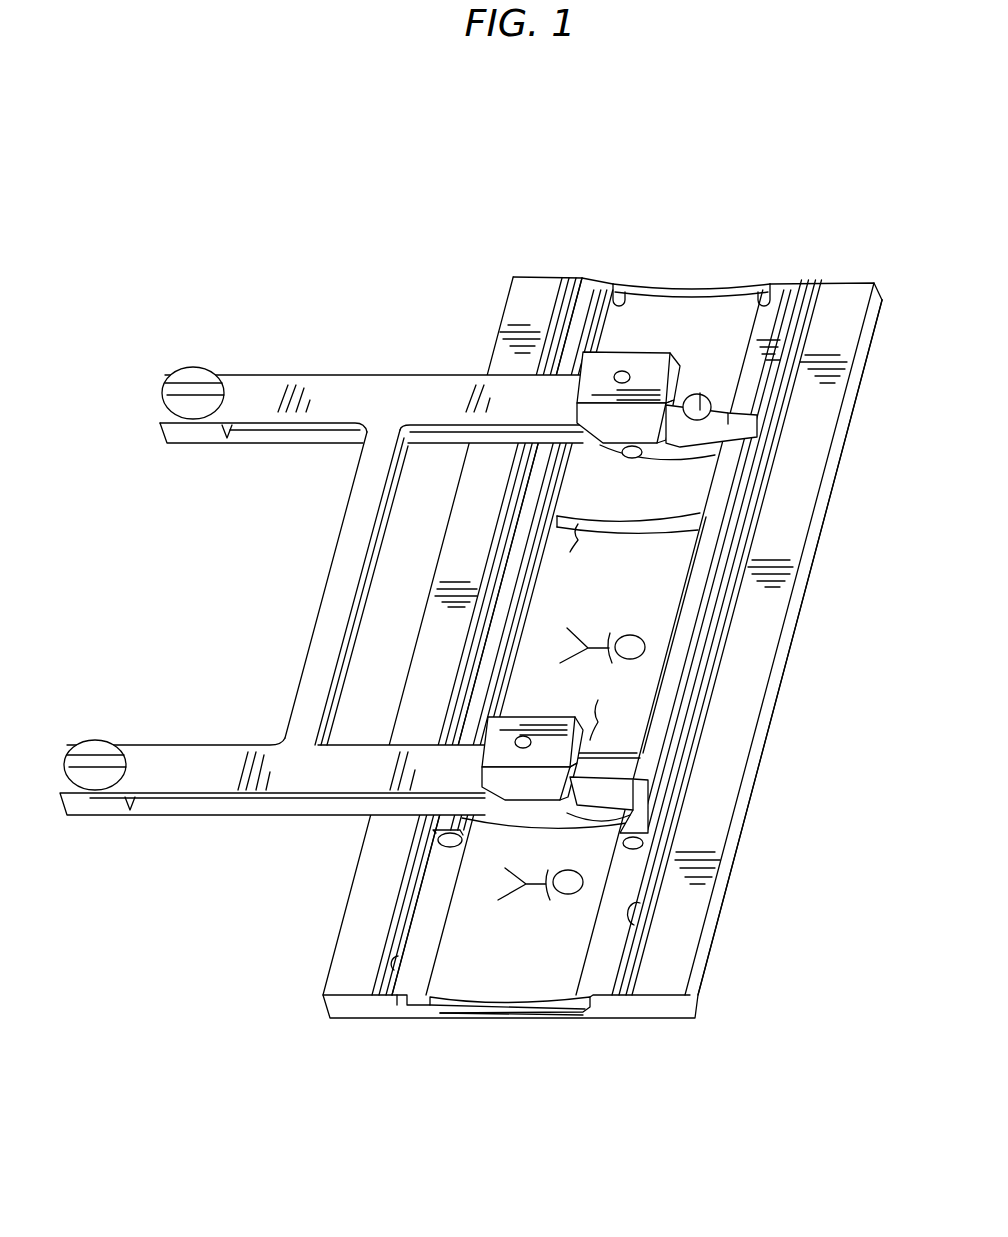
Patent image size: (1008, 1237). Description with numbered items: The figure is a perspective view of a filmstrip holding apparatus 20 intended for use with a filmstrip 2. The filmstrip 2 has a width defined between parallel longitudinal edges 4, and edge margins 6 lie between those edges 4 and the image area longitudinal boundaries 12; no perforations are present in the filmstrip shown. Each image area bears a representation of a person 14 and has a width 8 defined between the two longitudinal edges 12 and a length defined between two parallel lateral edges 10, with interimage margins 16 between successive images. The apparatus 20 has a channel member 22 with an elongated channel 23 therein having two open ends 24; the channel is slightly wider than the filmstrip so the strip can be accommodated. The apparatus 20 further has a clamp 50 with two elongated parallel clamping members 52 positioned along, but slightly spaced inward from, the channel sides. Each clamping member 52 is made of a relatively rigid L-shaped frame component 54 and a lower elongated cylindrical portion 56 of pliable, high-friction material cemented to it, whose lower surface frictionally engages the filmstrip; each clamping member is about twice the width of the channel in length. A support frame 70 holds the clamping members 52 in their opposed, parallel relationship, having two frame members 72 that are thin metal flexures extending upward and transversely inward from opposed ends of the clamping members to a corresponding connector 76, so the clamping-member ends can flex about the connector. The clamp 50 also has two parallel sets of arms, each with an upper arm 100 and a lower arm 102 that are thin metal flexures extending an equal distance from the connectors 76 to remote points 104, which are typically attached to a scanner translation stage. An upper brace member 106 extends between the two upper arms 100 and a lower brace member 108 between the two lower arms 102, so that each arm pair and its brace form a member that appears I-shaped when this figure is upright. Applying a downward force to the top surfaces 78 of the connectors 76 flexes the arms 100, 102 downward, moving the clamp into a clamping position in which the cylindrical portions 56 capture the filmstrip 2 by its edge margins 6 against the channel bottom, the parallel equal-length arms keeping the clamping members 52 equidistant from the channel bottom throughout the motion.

The filmstrip 2 is at (478, 904).
The longitudinal edges 4 is at (402, 960).
The edge margins 6 is at (440, 887).
The image area width 8 is at (505, 956).
The lateral edges 10 is at (596, 520).
The image area longitudinal boundaries 12 is at (620, 288).
The representation of a person 14 is at (636, 632).
The interimage margins 16 is at (575, 534).
The filmstrip holding apparatus 20 is at (768, 832).
The channel member 22 is at (748, 676).
The channel 23 is at (437, 1010).
The open ends 24 is at (666, 290).
The clamp 50 is at (338, 410).
The clamping members 52 is at (528, 520).
The L-shaped frame component 54 is at (480, 650).
The cylindrical portion 56 is at (438, 840).
The support frame 70 is at (700, 395).
The frame members 72 is at (712, 430).
The connector 76 is at (608, 425).
The top surfaces 78 is at (648, 362).
The upper arm 100 is at (404, 390).
The lower arm 102 is at (268, 440).
The remote points 104 is at (200, 385).
The upper brace member 106 is at (360, 512).
The lower brace member 108 is at (360, 586).